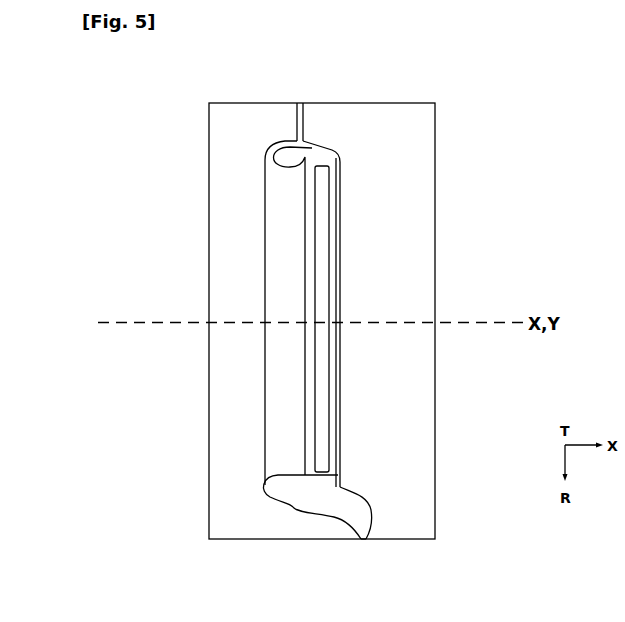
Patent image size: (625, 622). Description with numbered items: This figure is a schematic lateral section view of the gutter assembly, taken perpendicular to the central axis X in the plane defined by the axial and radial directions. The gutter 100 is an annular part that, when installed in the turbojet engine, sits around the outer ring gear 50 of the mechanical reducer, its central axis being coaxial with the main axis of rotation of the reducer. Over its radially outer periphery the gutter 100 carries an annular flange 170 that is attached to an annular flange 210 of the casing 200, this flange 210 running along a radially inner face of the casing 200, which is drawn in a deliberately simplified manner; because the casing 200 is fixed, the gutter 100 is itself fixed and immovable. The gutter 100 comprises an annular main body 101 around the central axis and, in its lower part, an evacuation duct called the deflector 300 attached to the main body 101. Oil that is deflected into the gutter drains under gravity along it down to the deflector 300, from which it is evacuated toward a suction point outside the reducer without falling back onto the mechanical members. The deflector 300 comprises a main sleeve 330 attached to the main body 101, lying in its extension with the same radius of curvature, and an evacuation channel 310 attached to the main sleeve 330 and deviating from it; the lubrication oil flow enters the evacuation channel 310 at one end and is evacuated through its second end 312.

The casing 200 is at (408, 102).
The annular flange of the casing 210 is at (303, 113).
The gutter 100 is at (352, 161).
The annular flange of the gutter 170 is at (292, 135).
The main body 101 is at (290, 247).
The outer ring gear 50 is at (325, 262).
The main sleeve 330 is at (278, 489).
The evacuation channel 310 is at (340, 506).
The deflector 300 is at (318, 520).
The second end of the evacuation channel 312 is at (363, 539).